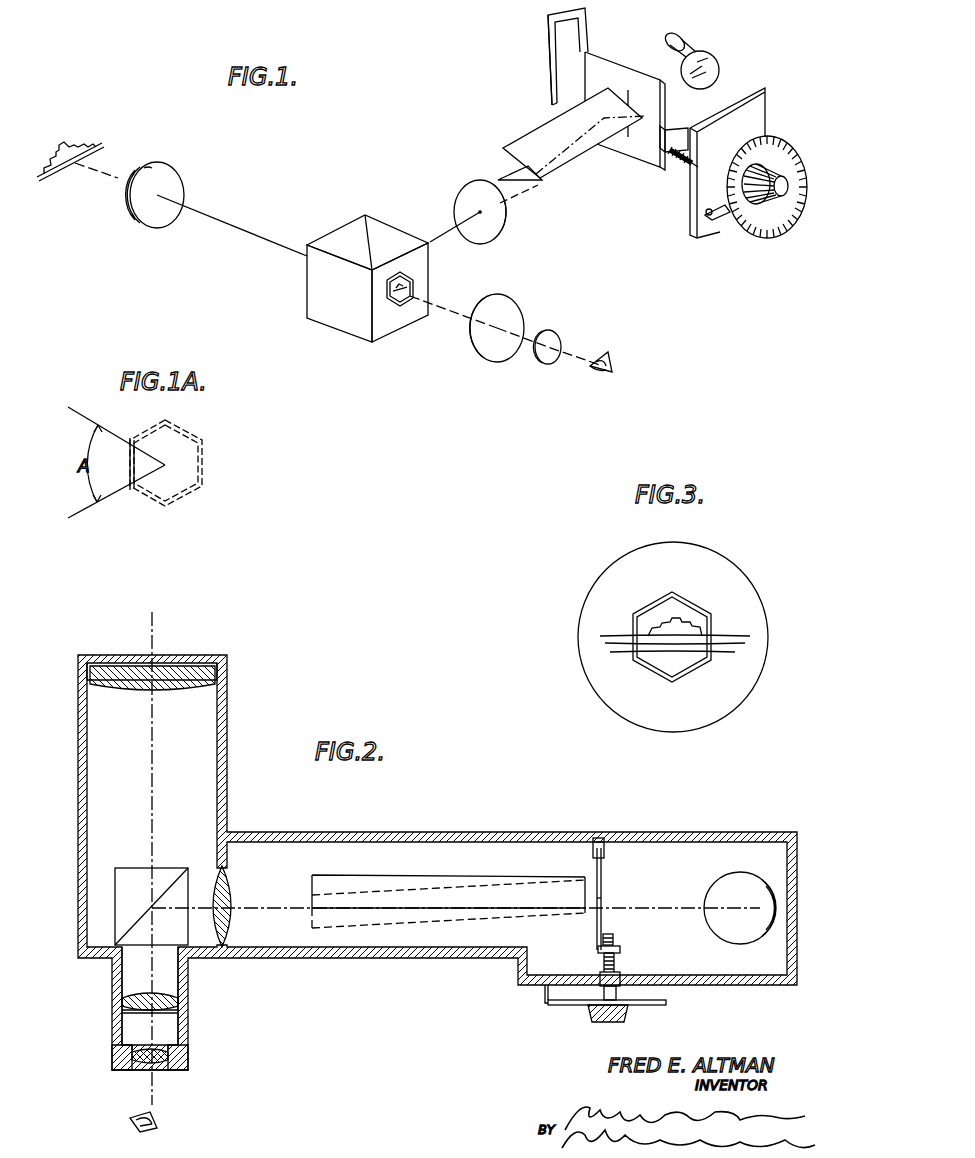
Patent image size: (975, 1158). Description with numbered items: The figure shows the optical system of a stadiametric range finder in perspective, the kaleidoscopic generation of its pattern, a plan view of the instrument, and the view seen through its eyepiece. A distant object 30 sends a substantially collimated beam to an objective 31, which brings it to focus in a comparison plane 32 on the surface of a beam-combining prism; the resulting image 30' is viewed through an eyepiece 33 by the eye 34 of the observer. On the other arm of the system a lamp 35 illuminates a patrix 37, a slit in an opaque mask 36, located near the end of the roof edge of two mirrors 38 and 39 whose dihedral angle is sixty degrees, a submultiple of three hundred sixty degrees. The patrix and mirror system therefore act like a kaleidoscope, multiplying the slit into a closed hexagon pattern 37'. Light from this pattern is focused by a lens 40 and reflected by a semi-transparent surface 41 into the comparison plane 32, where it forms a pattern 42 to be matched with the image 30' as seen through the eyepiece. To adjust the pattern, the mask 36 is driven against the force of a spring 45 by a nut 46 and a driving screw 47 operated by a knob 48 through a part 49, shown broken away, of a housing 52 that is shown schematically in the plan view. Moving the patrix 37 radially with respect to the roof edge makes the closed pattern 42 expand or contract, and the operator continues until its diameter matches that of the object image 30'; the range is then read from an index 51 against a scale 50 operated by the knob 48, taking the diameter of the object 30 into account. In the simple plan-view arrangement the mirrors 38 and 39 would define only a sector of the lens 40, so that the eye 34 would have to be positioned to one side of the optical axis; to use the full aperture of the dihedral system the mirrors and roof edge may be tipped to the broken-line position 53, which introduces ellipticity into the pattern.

In FIG. 1, the distant object 30 is at (71, 140).
In FIG. 3, the object image 30' is at (688, 597).
In FIG. 1, the objective 31 is at (157, 172).
In FIG. 2, the objective 31 is at (190, 668).
In FIG. 1, the comparison plane 32 is at (378, 327).
In FIG. 2, the comparison plane 32 is at (165, 940).
In FIG. 1, the eyepiece 33 is at (542, 358).
In FIG. 2, the eyepiece 33 is at (160, 1048).
In FIG. 1, the eye 34 is at (598, 372).
In FIG. 2, the eye 34 is at (132, 1120).
In FIG. 1, the lamp 35 is at (700, 51).
In FIG. 2, the lamp 35 is at (729, 878).
In FIG. 1, the opaque mask 36 is at (598, 66).
In FIG. 2, the opaque mask 36 is at (603, 888).
In FIG. 1, the patrix 37 is at (652, 77).
In FIG. 1A, the patrix 37 is at (116, 463).
In FIG. 2, the patrix 37 is at (638, 890).
In FIG. 1A, the hexagon pattern image of patrix 37' is at (190, 463).
In FIG. 1, the mirror 38 is at (518, 145).
In FIG. 1A, the mirror 38 is at (76, 410).
In FIG. 2, the mirror 38 is at (405, 880).
In FIG. 1, the mirror 39 is at (505, 177).
In FIG. 1A, the mirror 39 is at (74, 514).
In FIG. 1, the lens 40 is at (460, 190).
In FIG. 2, the lens 40 is at (238, 888).
In FIG. 1, the semi-transparent surface 41 is at (356, 230).
In FIG. 2, the semi-transparent surface 41 is at (172, 878).
In FIG. 1, the pattern 42 is at (405, 302).
In FIG. 3, the pattern 42 is at (656, 604).
In FIG. 1, the spring 45 is at (580, 32).
In FIG. 2, the spring 45 is at (605, 846).
In FIG. 1, the nut 46 is at (672, 130).
In FIG. 2, the nut 46 is at (620, 953).
In FIG. 1, the driving screw 47 is at (685, 162).
In FIG. 2, the driving screw 47 is at (614, 940).
In FIG. 1, the knob 48 is at (768, 210).
In FIG. 2, the knob 48 is at (598, 1018).
In FIG. 1, the housing part 49 is at (760, 90).
In FIG. 2, the housing part 49 is at (728, 986).
In FIG. 1, the scale 50 is at (790, 140).
In FIG. 2, the scale 50 is at (666, 1004).
In FIG. 1, the index 51 is at (722, 220).
In FIG. 2, the index 51 is at (550, 1006).
In FIG. 2, the housing 52 is at (228, 738).
In FIG. 2, the tipped position 53 is at (375, 929).